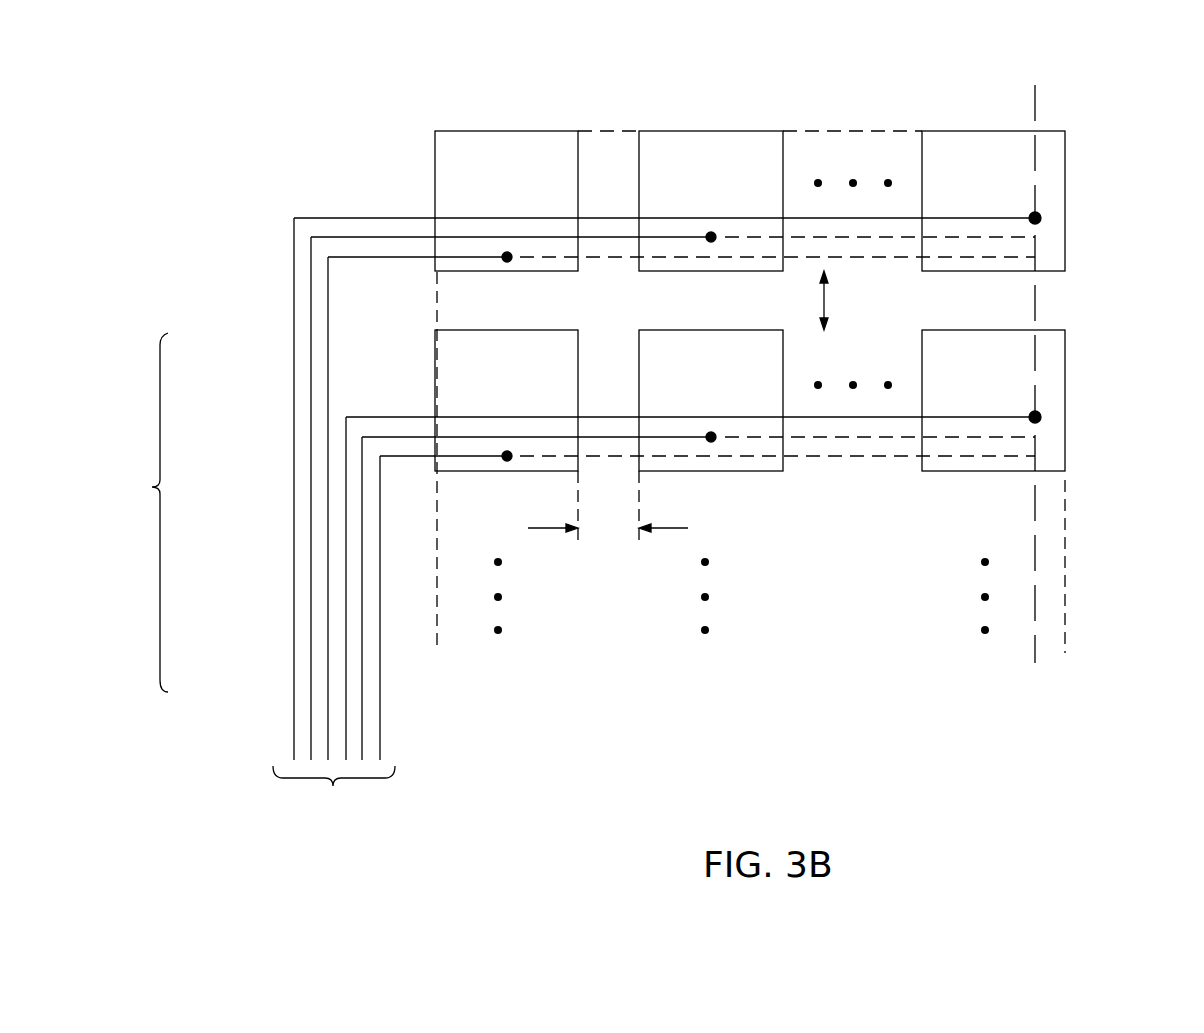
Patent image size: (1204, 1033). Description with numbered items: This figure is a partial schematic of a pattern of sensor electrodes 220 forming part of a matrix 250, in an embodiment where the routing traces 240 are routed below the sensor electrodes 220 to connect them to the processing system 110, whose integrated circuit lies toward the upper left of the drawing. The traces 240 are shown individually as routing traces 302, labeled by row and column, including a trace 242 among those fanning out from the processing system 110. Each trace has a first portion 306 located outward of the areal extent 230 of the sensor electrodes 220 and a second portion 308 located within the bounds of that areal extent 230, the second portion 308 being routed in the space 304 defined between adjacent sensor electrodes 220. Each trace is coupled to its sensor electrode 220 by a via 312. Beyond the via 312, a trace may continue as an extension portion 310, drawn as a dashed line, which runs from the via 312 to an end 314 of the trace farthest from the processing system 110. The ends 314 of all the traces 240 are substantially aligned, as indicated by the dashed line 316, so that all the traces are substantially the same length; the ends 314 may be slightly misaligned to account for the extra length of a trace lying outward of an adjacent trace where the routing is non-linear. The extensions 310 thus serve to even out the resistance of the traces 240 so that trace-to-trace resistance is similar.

The processing system 110 is at (334, 809).
The sensor electrodes 220 is at (545, 185).
The areal extent 230 is at (829, 118).
The routing traces 240 is at (640, 60).
The routing trace 242 is at (345, 200).
The matrix 250 is at (485, 118).
The routing traces 302 is at (380, 668).
The space 304 is at (826, 292).
The first portion 306 is at (311, 217).
The second portion 308 is at (623, 218).
The extension portion 310 is at (597, 257).
The via 312 is at (507, 257).
The end 314 is at (1060, 210).
The dashed line 316 is at (1035, 645).